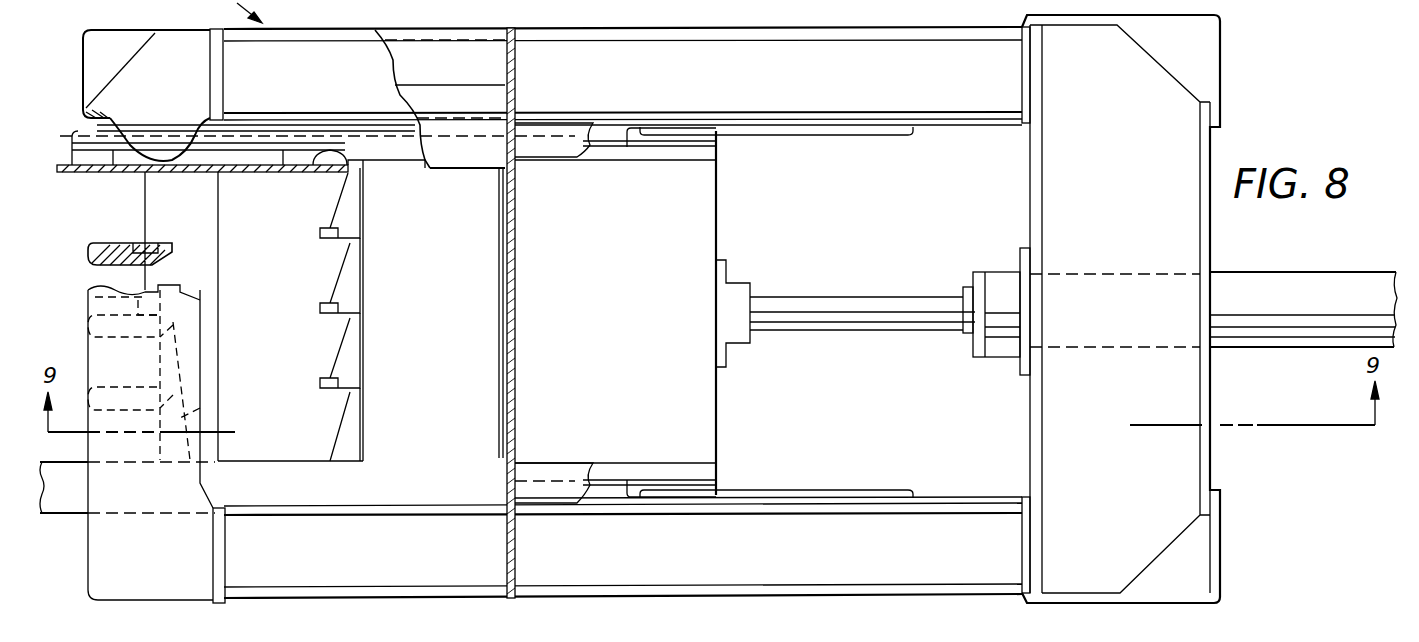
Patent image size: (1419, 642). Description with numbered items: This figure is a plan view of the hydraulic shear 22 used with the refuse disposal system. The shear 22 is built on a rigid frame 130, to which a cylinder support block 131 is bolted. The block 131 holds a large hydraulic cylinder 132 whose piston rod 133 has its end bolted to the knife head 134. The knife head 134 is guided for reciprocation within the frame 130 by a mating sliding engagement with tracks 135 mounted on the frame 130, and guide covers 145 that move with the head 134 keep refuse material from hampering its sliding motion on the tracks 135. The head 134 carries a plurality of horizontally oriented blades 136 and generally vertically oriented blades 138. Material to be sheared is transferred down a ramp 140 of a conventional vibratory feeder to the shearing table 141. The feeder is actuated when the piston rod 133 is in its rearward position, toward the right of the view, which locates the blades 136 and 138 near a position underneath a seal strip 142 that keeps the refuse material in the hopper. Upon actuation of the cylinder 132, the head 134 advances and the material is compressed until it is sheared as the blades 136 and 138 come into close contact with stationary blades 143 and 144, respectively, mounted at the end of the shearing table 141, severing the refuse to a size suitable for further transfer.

The hydraulic shear 22 is at (222, 11).
The rigid frame 130 is at (860, 559).
The cylinder support block 131 is at (1048, 543).
The hydraulic cylinder 132 is at (1342, 280).
The piston rod 133 is at (812, 300).
The knife head 134 is at (708, 203).
The tracks 135 is at (887, 128).
The horizontally oriented blades 136 is at (355, 404).
The vertically oriented blades 138 is at (330, 226).
The ramp 140 is at (440, 92).
The shearing table 141 is at (285, 348).
The seal strip 142 is at (510, 260).
The stationary blades 143 is at (200, 408).
The stationary blades 144 is at (140, 243).
The guide covers 145 is at (77, 172).